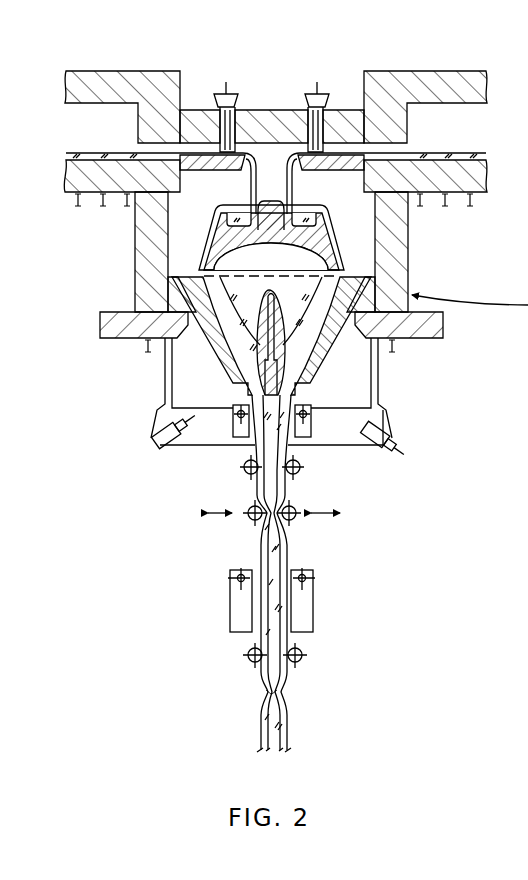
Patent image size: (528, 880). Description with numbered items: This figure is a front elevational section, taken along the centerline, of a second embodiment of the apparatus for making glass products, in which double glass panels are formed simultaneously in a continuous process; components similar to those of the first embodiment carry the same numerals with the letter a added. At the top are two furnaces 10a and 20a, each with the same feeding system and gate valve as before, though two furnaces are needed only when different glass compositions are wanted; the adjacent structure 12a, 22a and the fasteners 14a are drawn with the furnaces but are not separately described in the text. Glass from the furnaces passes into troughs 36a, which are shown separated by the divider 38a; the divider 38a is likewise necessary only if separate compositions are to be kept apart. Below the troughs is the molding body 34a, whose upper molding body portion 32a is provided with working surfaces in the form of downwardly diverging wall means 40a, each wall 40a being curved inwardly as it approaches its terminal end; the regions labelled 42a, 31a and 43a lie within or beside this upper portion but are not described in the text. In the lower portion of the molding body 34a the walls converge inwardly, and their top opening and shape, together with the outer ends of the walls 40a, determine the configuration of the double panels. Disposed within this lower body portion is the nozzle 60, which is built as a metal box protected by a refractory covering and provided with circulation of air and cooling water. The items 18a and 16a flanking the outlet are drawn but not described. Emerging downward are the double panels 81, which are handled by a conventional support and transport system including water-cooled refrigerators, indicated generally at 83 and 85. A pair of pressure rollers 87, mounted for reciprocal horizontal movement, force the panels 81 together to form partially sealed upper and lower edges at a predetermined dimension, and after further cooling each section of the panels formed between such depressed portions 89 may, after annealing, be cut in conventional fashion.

The furnace 10a is at (152, 71).
The furnace 20a is at (418, 72).
The first melt channel plate 12a is at (198, 152).
The second melt channel plate 22a is at (350, 160).
The fastening bolts 14a is at (210, 104).
The divider 38a is at (270, 198).
The troughs 36a is at (238, 212).
The downwardly diverging wall means 40a is at (218, 237).
The housing cavity 42a is at (218, 262).
The upper molding body portion 32a is at (352, 247).
The dome-shaped melt chamber 31a is at (250, 251).
The spacer ring 43a is at (358, 272).
The molding body (lower molding body portion) 34a is at (330, 363).
The nozzle 60 is at (255, 338).
The spray nozzle 18a is at (157, 446).
The spray nozzle 16a is at (386, 449).
The support and transport system 83 is at (239, 437).
The support and transport system 85 is at (301, 472).
The pressure rollers 87 is at (297, 518).
The double panels 81 is at (288, 552).
The depressed portions 89 is at (284, 692).